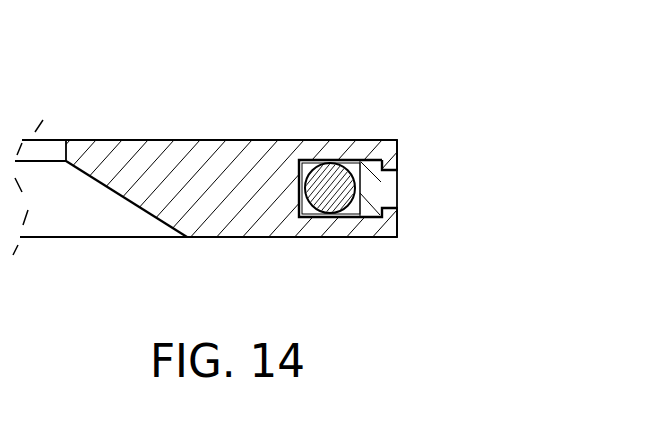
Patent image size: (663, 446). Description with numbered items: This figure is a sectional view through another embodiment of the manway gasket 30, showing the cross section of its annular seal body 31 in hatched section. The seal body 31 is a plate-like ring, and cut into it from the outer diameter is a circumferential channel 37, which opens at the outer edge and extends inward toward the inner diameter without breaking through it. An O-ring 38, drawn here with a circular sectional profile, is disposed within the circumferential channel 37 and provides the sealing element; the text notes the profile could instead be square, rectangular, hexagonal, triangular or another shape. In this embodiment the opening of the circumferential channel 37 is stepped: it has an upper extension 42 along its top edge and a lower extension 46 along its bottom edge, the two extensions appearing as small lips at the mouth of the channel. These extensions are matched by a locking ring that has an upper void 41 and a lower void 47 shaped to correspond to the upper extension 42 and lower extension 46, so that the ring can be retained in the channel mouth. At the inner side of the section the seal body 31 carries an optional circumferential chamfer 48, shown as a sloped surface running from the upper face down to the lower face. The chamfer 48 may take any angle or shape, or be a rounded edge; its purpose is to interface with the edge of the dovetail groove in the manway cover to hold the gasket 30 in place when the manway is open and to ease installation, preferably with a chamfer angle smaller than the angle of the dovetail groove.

The manway gasket 30 is at (59, 60).
The seal body 31 is at (235, 167).
The circumferential channel 37 is at (352, 162).
The O-ring 38 is at (327, 200).
The upper void 41 is at (389, 155).
The upper extension 42 is at (390, 164).
The lower extension 46 is at (392, 210).
The lower void 47 is at (389, 222).
The circumferential chamfer 48 is at (127, 198).